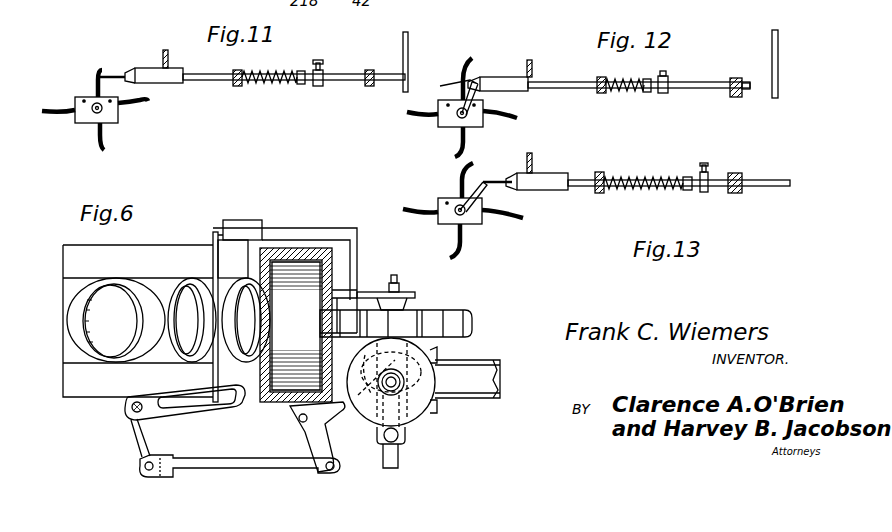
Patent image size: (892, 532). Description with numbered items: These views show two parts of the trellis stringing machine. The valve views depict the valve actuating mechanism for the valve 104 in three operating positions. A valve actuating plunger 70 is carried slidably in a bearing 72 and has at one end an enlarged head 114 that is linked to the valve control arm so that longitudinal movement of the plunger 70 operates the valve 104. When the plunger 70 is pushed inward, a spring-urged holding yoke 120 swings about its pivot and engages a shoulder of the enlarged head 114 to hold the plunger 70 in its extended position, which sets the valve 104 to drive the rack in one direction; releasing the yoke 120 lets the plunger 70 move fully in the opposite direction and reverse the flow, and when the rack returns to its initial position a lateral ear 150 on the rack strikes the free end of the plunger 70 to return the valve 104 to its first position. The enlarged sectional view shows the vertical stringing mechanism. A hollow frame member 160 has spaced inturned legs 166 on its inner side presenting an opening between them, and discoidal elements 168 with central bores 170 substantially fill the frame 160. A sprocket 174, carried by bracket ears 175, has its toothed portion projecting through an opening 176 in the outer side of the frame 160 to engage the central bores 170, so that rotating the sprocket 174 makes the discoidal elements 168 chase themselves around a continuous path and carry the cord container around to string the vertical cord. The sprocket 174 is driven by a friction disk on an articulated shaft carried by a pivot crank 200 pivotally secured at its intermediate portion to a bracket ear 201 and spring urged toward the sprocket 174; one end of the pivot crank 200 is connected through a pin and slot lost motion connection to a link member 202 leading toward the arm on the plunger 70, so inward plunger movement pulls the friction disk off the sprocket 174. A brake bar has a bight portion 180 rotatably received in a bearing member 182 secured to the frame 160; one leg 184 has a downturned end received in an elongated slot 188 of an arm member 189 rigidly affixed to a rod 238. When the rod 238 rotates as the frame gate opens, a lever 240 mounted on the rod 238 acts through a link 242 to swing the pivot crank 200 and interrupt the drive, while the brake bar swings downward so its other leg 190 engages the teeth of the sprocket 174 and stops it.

In FIG. 11, the valve 104 is at (123, 125).
In FIG. 12, the valve 104 is at (488, 128).
In FIG. 13, the valve 104 is at (483, 227).
In FIG. 11, the enlarged head 114 is at (175, 85).
In FIG. 12, the enlarged head 114 is at (508, 88).
In FIG. 13, the enlarged head 114 is at (547, 186).
In FIG. 11, the holding yoke 120 is at (162, 55).
In FIG. 12, the holding yoke 120 is at (533, 68).
In FIG. 13, the holding yoke 120 is at (533, 160).
In FIG. 11, the bearing 72 is at (237, 88).
In FIG. 12, the bearing 72 is at (599, 95).
In FIG. 13, the bearing 72 is at (668, 182).
In FIG. 11, the valve actuating plunger 70 is at (328, 86).
In FIG. 12, the valve actuating plunger 70 is at (663, 82).
In FIG. 13, the valve actuating plunger 70 is at (711, 192).
In FIG. 11, the lateral ear 150 is at (410, 50).
In FIG. 12, the lateral ear 150 is at (780, 80).
In FIG. 6, the hollow frame member 160 is at (312, 250).
In FIG. 6, the inturned legs 166 is at (203, 263).
In FIG. 6, the discoidal elements 168 is at (80, 347).
In FIG. 6, the central bores 170 is at (92, 290).
In FIG. 6, the sprocket 174 is at (435, 310).
In FIG. 6, the bracket ears 175 is at (368, 290).
In FIG. 6, the opening 176 is at (332, 298).
In FIG. 6, the bight portion of brake bar 180 is at (280, 230).
In FIG. 6, the bearing member 182 is at (243, 222).
In FIG. 6, the leg of brake bar 184 is at (213, 287).
In FIG. 6, the elongated slot 188 is at (222, 408).
In FIG. 6, the arm member 189 is at (145, 403).
In FIG. 6, the leg of brake bar 190 is at (323, 304).
In FIG. 6, the pivot crank 200 is at (320, 450).
In FIG. 6, the bracket ear 201 is at (300, 415).
In FIG. 6, the link member 202 is at (393, 458).
In FIG. 6, the rod 238 is at (132, 414).
In FIG. 6, the lever 240 is at (152, 440).
In FIG. 6, the link 242 is at (247, 466).